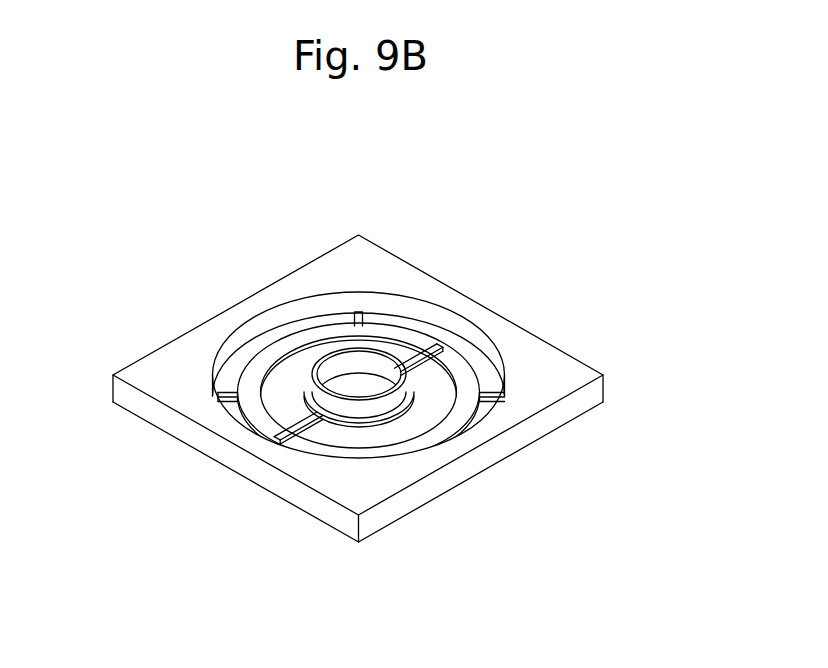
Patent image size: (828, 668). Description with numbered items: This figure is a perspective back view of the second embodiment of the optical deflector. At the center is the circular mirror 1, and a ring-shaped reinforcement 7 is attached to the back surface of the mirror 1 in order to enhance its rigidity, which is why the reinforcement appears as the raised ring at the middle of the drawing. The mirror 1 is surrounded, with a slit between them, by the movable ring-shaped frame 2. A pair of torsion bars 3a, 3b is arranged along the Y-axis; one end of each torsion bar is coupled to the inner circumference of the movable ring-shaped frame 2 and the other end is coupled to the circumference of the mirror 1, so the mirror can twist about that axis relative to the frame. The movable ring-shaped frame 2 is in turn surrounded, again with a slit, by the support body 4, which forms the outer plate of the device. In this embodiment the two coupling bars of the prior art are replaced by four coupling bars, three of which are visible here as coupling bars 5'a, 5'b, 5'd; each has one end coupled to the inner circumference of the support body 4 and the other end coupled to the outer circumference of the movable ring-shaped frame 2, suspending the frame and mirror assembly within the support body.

The mirror 1 is at (347, 426).
The movable ring-shaped frame 2 is at (253, 413).
The torsion bar 3a is at (394, 348).
The torsion bar 3b is at (316, 430).
The support body 4 is at (539, 392).
The coupling bar 5'a is at (330, 232).
The coupling bar 5'b is at (144, 346).
The coupling bar 5'd is at (588, 344).
The ring-shaped reinforcement 7 is at (340, 365).